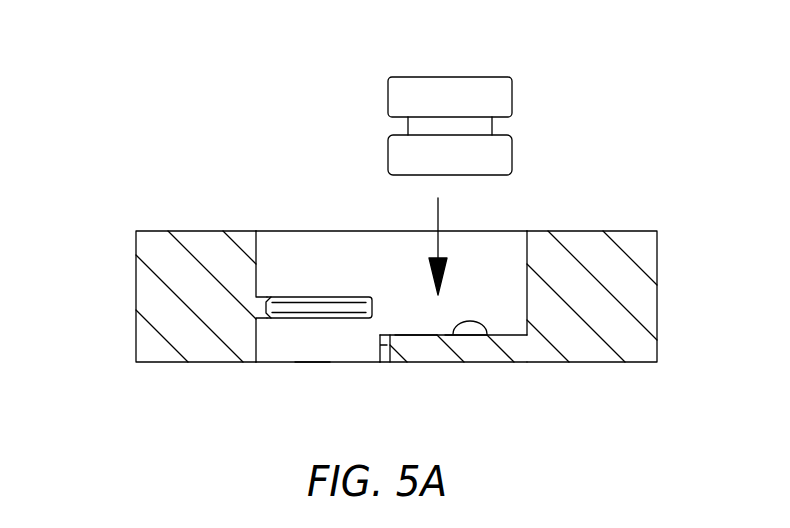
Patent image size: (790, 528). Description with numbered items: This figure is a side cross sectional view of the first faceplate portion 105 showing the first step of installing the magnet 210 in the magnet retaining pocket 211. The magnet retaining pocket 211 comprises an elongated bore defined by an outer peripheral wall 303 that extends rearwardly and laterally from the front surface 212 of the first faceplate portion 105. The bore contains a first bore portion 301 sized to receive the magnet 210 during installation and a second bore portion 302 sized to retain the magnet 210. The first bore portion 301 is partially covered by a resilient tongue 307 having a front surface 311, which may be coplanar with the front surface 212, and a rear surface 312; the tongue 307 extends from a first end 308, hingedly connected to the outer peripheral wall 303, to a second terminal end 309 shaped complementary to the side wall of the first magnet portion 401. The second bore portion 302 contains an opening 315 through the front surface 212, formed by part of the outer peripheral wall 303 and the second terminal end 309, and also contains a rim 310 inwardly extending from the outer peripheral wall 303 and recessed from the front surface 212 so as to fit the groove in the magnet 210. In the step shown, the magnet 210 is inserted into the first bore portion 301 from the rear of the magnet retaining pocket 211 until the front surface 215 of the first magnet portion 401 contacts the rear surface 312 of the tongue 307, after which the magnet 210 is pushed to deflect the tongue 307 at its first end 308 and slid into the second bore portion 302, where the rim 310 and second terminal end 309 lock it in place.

The magnet 210 is at (452, 100).
The first magnet portion 401 is at (505, 153).
The front surface 215 is at (430, 175).
The front surface 212 is at (205, 363).
The outer peripheral wall 303 is at (250, 230).
The rim 310 is at (290, 307).
The second bore portion 302 is at (263, 363).
The opening 315 is at (312, 362).
The first bore portion 301 is at (498, 250).
The magnet retaining pocket 211 is at (312, 243).
The second terminal end 309 is at (377, 358).
The first end 308 is at (525, 362).
The resilient tongue 307 is at (423, 352).
The front surface 311 is at (459, 352).
The rear surface 312 is at (487, 334).
The first faceplate portion 105 is at (620, 333).